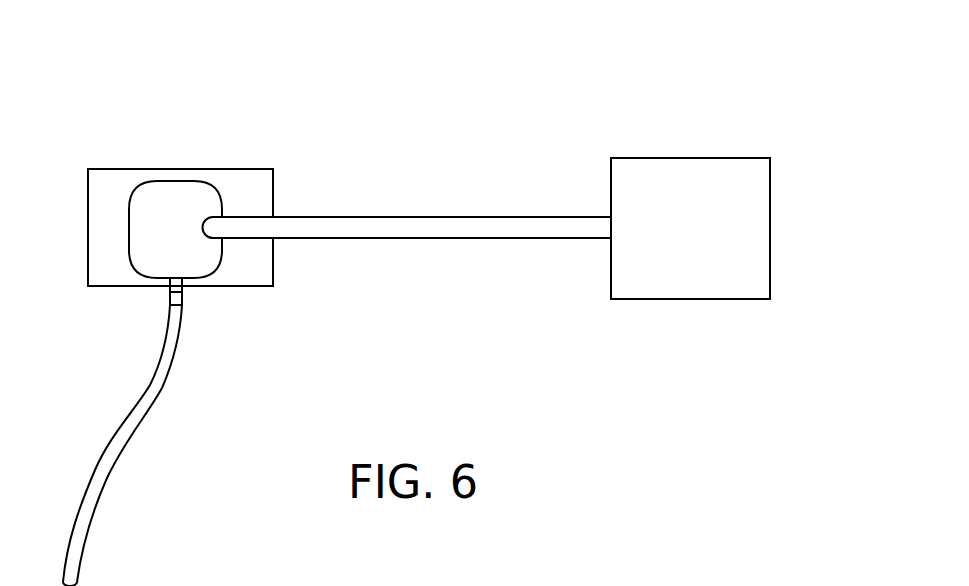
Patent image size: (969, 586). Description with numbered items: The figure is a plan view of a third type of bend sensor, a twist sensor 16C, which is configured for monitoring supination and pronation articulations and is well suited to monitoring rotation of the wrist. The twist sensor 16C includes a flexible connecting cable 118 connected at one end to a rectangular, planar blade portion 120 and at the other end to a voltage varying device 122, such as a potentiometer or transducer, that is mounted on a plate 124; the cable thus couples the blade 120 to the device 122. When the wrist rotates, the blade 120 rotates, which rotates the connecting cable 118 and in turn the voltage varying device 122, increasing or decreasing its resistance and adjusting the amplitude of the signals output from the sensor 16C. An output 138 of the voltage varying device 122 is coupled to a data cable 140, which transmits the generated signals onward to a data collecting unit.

The twist sensor 16C is at (440, 140).
The flexible connecting cable 118 is at (390, 225).
The blade portion 120 is at (739, 233).
The voltage varying device 122 is at (160, 207).
The plate 124 is at (258, 200).
The outputs 138 is at (163, 287).
The data cable 140 is at (110, 452).